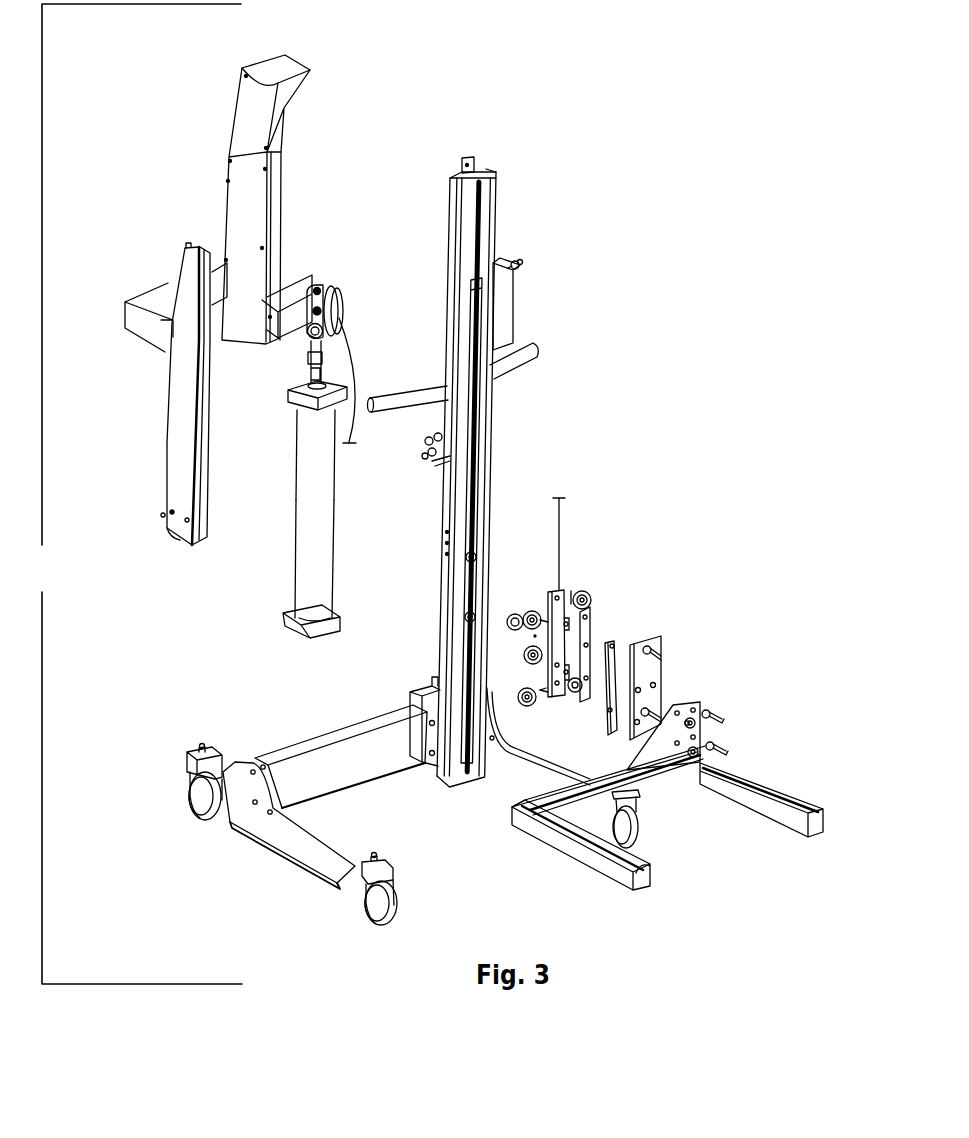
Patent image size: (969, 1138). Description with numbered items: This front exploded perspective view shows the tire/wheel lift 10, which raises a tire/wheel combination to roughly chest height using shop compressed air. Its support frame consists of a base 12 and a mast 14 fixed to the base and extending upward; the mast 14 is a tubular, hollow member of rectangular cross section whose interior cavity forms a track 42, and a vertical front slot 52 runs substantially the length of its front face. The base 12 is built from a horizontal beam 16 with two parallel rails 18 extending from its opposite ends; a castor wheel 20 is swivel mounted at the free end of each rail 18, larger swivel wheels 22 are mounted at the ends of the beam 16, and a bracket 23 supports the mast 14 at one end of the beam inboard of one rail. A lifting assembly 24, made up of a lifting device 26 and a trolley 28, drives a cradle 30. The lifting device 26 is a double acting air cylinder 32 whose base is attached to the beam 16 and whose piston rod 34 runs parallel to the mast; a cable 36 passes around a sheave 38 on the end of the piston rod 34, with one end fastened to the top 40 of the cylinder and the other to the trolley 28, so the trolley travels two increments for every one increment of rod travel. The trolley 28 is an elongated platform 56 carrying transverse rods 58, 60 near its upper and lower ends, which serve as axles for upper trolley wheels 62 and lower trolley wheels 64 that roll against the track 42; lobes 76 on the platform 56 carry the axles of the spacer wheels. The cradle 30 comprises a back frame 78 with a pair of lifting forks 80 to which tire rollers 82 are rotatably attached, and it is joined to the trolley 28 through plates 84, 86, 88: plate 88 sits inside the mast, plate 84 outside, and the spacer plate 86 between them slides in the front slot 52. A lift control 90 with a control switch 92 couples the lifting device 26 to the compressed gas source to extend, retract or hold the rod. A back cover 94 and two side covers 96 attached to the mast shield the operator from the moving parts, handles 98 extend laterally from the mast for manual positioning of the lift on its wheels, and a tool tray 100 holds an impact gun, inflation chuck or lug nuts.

The tire/wheel lift 10 is at (136, 494).
The base 12 is at (292, 738).
The mast 14 is at (499, 201).
The horizontal beam 16 is at (362, 797).
The rails 18 is at (267, 851).
The castor wheel 20 is at (377, 924).
The swivel wheels 22 is at (198, 819).
The bracket 23 is at (426, 761).
The lifting assembly 24 is at (340, 529).
The lifting device 26 is at (293, 553).
The trolley 28 is at (571, 591).
The cradle 30 is at (757, 771).
The double acting air cylinder 32 is at (296, 466).
The piston rod 34 is at (326, 366).
The cable 36 is at (355, 446).
The sheave 38 is at (320, 289).
The top of double acting air cylinder 40 is at (288, 398).
The track 42 is at (496, 167).
The front slot 52 is at (491, 454).
The elongated platform 56 is at (559, 713).
The upper rod 58 is at (539, 600).
The lower rod 60 is at (534, 691).
The upper trolley wheels 62 is at (586, 593).
The lower trolley wheels 64 is at (529, 712).
The lobes 76 is at (536, 640).
The back frame 78 is at (667, 784).
The lifting forks 80 is at (591, 883).
The tire rollers 82 is at (565, 839).
The plate 84 is at (664, 691).
The spacer plate 86 is at (571, 665).
The plate 88 is at (592, 626).
The lift control 90 is at (514, 306).
The control switch 92 is at (526, 259).
The back cover 94 is at (272, 178).
The side covers 96 is at (166, 456).
The handles 98 is at (541, 352).
The tool tray 100 is at (141, 292).